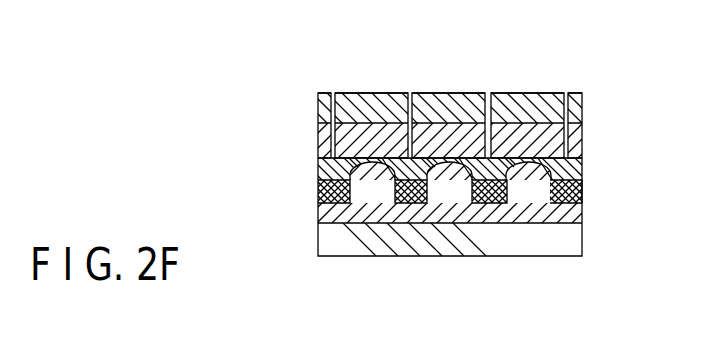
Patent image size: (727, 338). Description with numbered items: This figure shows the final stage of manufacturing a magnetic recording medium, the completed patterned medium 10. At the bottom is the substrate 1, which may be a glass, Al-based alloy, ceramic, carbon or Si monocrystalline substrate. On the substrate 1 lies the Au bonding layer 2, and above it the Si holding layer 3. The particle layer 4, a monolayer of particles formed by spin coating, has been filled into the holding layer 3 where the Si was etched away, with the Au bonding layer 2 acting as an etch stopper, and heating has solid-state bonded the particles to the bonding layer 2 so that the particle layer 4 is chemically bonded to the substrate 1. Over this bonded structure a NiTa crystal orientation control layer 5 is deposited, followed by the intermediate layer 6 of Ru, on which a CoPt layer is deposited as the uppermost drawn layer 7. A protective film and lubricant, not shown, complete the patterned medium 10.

The substrate 1 is at (320, 243).
The bonding layer 2 is at (320, 210).
The holding layer 3 is at (322, 196).
The particle layer 4 is at (372, 170).
The crystal orientation control layer 5 is at (324, 173).
The intermediate layer 6 is at (322, 145).
The upper electrode layer 7 is at (322, 109).
The patterned medium 10 is at (553, 65).